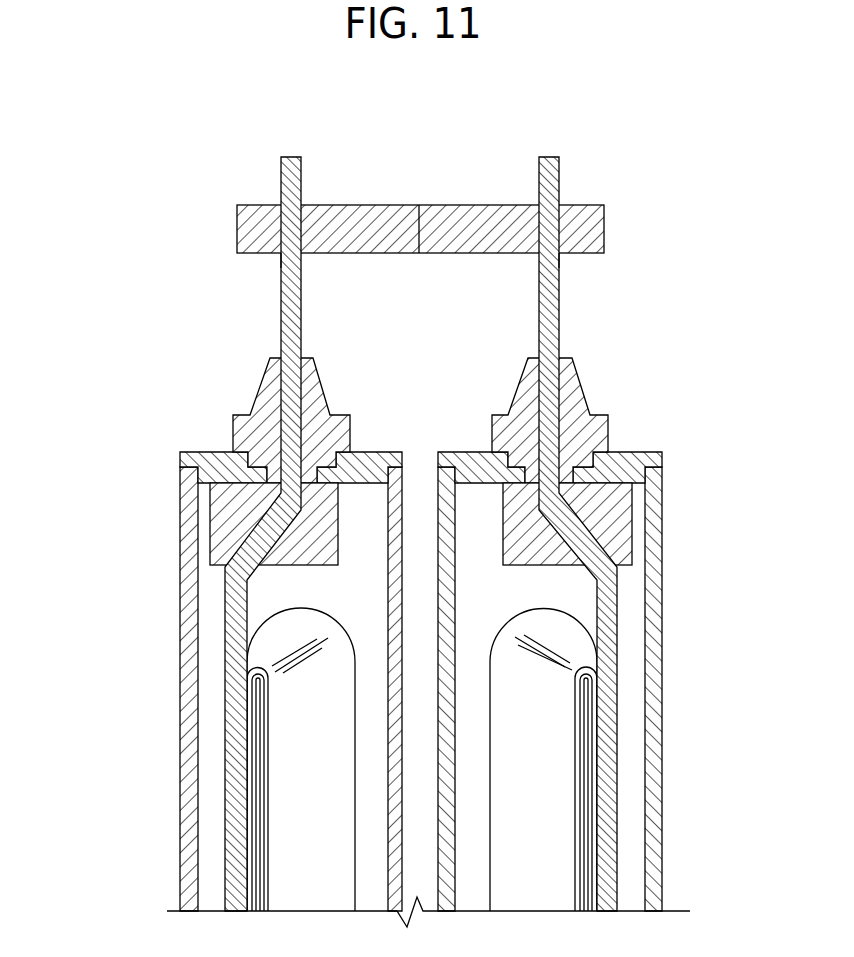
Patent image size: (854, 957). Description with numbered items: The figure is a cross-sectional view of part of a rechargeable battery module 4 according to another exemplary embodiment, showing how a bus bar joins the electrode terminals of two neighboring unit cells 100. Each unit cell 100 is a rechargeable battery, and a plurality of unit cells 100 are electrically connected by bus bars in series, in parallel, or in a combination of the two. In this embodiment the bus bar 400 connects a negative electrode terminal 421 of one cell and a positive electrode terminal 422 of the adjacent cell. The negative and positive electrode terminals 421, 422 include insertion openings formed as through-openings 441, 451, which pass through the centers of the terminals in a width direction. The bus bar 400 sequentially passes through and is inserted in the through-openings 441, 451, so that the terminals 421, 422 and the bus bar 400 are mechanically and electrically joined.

The rechargeable battery module 4 is at (416, 93).
The unit cell 100 is at (152, 630).
The bus bar 400 is at (462, 204).
The negative electrode terminal 421 is at (548, 157).
The positive electrode terminal 422 is at (291, 157).
The through-opening 441 is at (540, 248).
The through-opening 451 is at (298, 248).